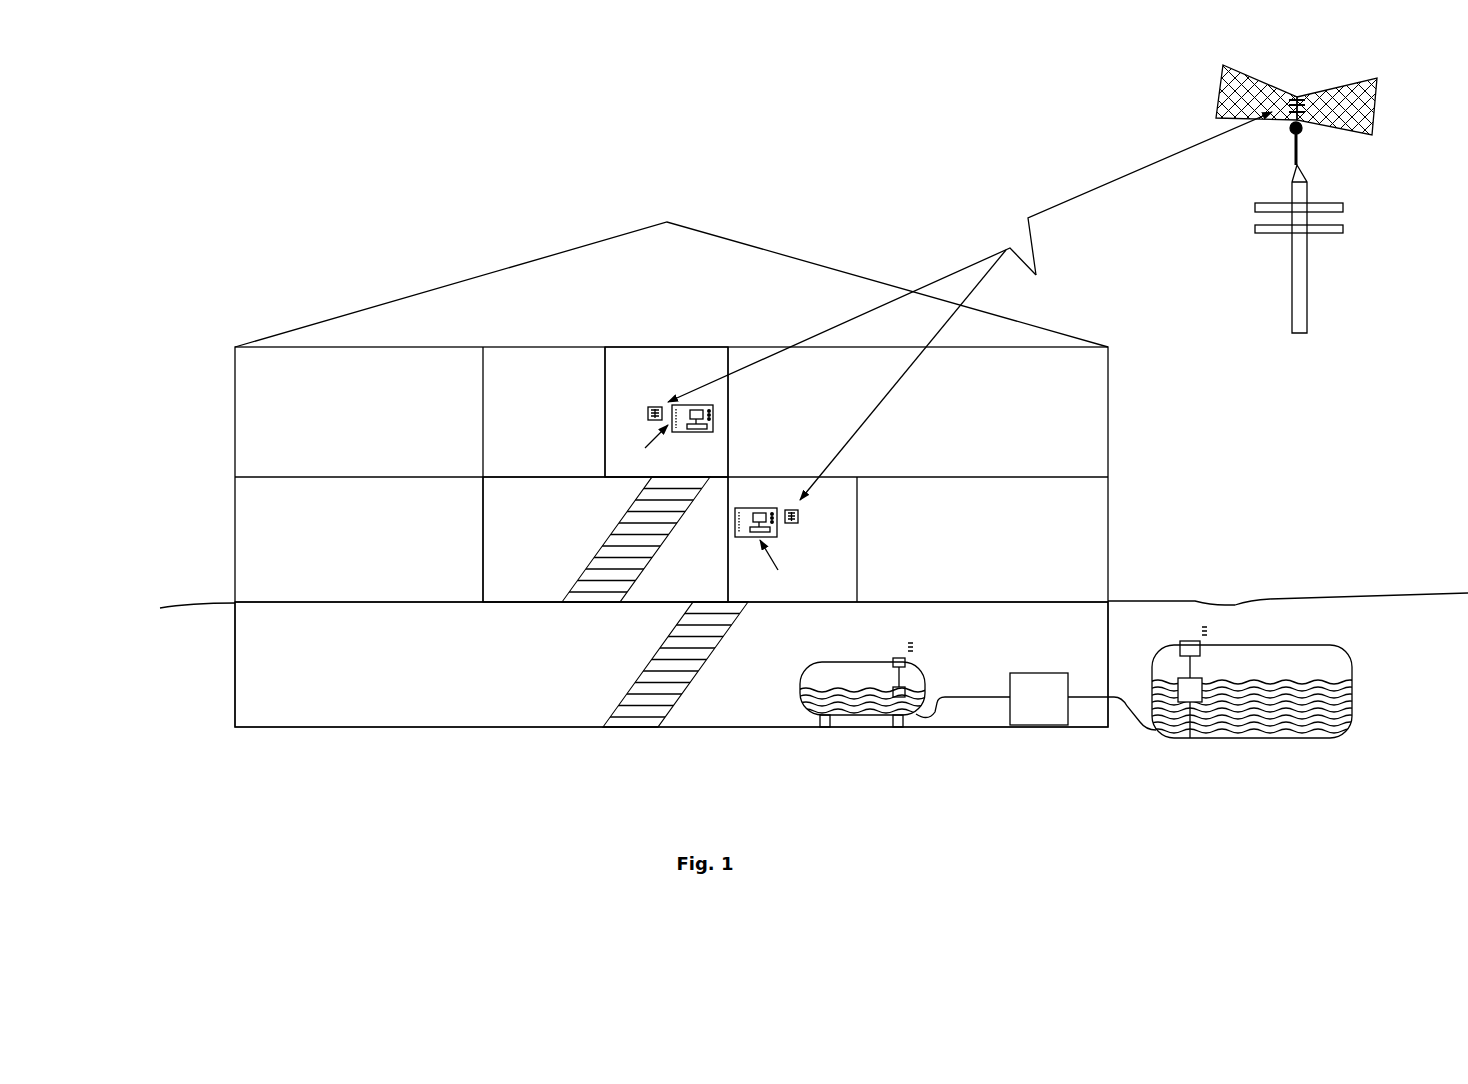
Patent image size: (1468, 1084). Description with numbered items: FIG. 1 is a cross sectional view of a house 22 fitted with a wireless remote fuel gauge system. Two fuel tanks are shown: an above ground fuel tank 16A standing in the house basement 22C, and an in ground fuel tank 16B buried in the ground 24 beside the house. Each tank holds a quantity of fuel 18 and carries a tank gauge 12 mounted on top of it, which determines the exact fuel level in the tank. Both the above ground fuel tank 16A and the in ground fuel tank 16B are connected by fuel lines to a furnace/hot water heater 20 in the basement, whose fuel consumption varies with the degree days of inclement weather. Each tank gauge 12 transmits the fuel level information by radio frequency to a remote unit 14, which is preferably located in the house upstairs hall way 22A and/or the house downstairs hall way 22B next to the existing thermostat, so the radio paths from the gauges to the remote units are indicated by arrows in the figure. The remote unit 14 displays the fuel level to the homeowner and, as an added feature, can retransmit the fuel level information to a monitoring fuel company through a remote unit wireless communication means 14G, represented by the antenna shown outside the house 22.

The tank gauge 12 is at (895, 656).
The remote unit 14 is at (648, 405).
The remote unit wireless communication means 14G is at (1022, 282).
The above ground fuel tank 16A is at (818, 663).
The in ground fuel tank 16B is at (1340, 648).
The fuel 18 is at (848, 715).
The furnace/hot water heater 20 is at (1037, 702).
The house 22 is at (525, 262).
The house upstairs hall way 22A is at (676, 378).
The house downstairs hall way 22B is at (541, 518).
The house basement 22C is at (541, 650).
The ground 24 is at (198, 660).